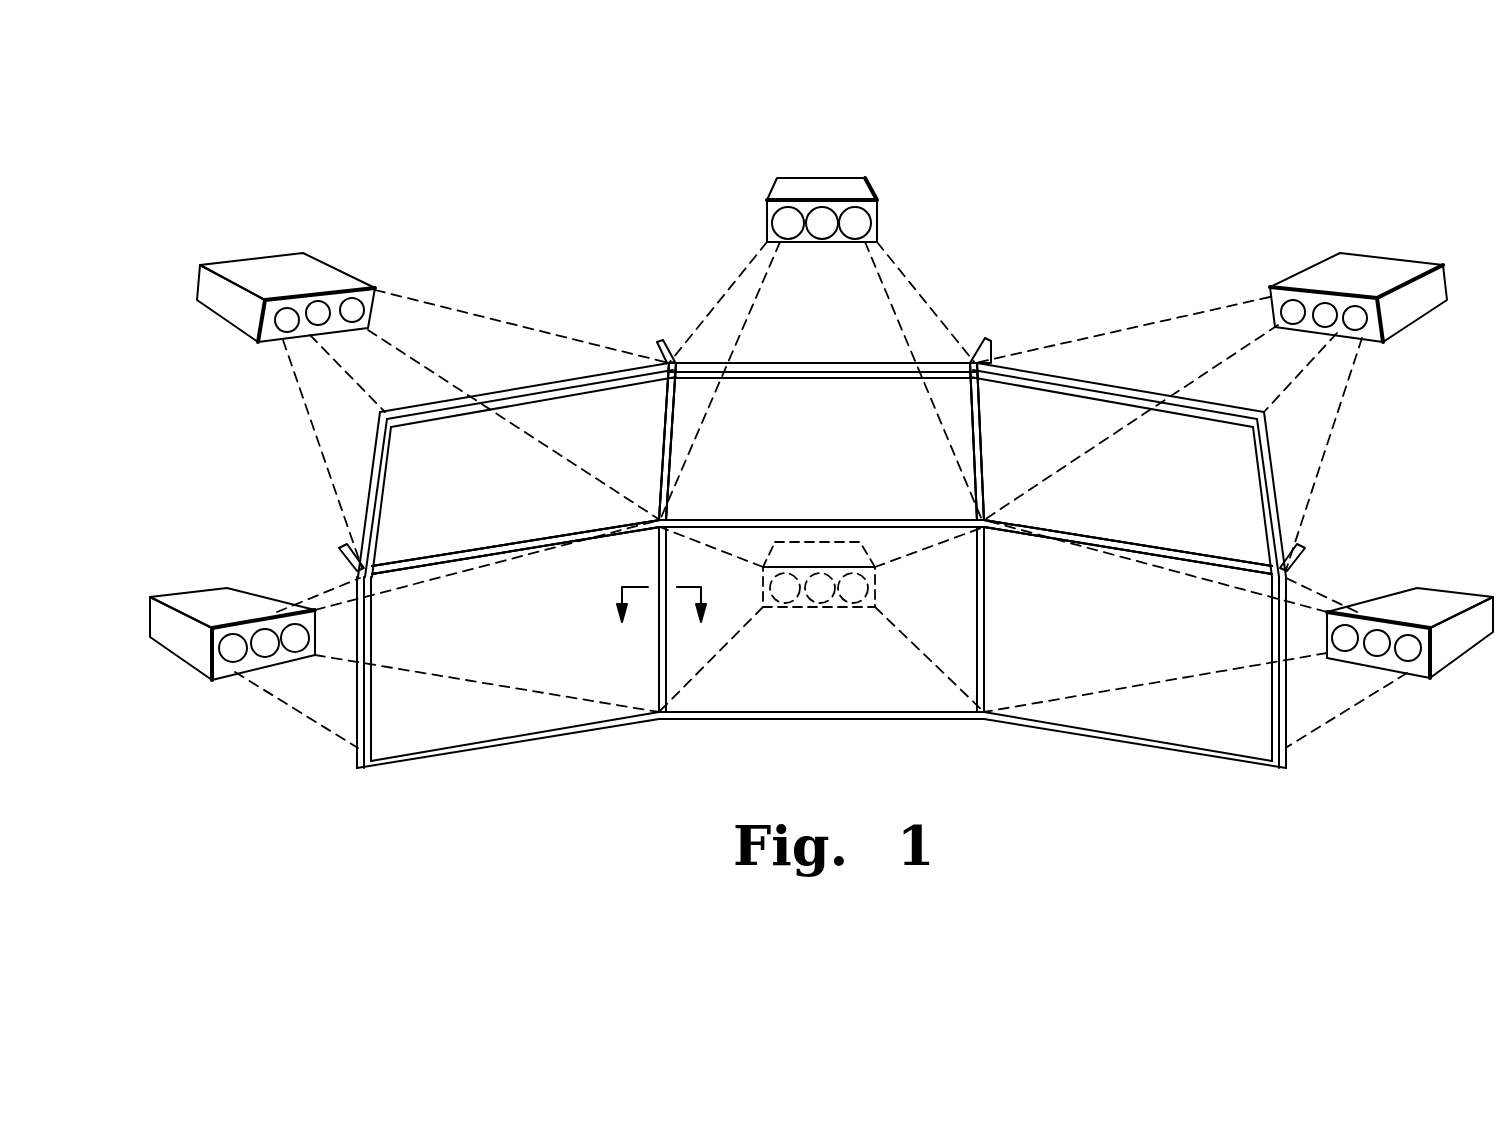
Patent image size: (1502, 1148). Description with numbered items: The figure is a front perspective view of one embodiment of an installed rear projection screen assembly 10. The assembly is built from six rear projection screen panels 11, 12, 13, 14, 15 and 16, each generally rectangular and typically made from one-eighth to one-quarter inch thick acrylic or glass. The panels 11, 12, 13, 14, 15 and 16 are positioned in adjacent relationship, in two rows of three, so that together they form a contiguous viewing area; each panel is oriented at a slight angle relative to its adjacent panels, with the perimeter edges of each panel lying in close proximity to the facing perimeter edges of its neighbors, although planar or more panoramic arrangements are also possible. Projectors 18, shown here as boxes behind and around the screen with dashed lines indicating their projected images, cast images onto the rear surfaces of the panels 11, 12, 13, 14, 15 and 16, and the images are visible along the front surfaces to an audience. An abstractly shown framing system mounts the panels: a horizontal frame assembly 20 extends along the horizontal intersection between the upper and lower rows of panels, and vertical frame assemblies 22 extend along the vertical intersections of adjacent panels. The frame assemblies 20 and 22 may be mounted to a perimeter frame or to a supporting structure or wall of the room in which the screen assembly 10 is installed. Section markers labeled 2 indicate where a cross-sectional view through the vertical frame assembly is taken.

The rear projection screen assembly 10 is at (827, 602).
The rear projection screen panel 11 is at (408, 478).
The rear projection screen panel 12 is at (855, 407).
The rear projection screen panel 13 is at (1240, 485).
The rear projection screen panel 14 is at (427, 713).
The rear projection screen panel 15 is at (753, 690).
The rear projection screen panel 16 is at (1217, 715).
The projector 18 is at (268, 270).
The horizontal frame assembly 20 is at (587, 525).
The vertical frame assembly 22 is at (990, 452).
The section line 2- 2 is at (661, 591).